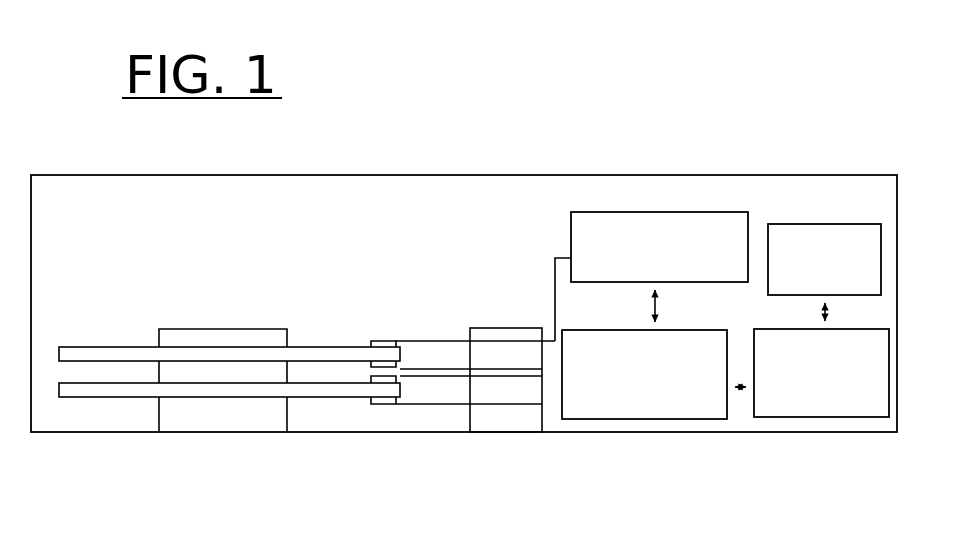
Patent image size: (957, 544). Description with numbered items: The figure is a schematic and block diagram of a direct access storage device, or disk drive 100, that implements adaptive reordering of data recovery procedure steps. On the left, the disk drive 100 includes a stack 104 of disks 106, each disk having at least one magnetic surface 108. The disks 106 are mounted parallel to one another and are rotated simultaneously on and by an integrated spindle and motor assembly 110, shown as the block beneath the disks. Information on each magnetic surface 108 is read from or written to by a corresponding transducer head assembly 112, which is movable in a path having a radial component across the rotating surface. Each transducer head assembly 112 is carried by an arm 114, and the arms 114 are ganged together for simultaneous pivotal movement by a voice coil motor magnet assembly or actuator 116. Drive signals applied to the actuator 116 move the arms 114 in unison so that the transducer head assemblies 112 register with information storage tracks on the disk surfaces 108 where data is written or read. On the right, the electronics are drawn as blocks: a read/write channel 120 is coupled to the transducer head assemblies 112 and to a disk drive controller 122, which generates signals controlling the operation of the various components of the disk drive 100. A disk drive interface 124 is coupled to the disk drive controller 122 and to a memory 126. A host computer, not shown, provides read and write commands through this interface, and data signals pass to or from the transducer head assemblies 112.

The disk drive 100 is at (322, 437).
The stack 104 is at (211, 369).
The disks 106 is at (60, 361).
The magnetic surface 108 is at (115, 344).
The integrated spindle and motor assembly 110 is at (215, 326).
The transducer head assembly 112 is at (378, 338).
The arm 114 is at (441, 337).
The voice coil motor magnet assembly 116 is at (525, 325).
The read/write channel 120 is at (659, 247).
The disk drive controller 122 is at (644, 374).
The disk drive interface 124 is at (821, 373).
The memory 126 is at (824, 259).